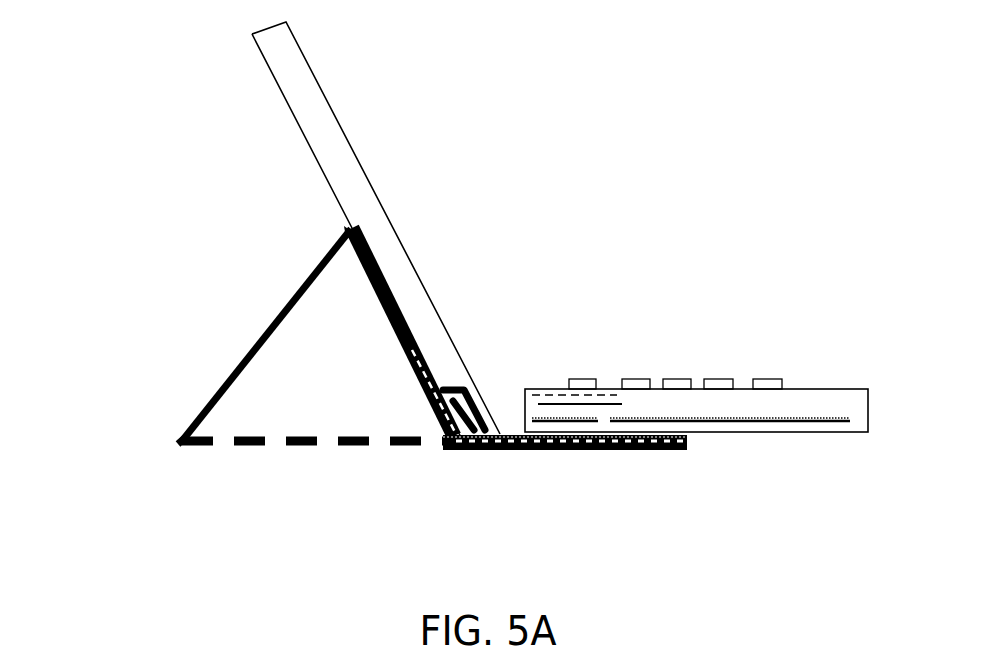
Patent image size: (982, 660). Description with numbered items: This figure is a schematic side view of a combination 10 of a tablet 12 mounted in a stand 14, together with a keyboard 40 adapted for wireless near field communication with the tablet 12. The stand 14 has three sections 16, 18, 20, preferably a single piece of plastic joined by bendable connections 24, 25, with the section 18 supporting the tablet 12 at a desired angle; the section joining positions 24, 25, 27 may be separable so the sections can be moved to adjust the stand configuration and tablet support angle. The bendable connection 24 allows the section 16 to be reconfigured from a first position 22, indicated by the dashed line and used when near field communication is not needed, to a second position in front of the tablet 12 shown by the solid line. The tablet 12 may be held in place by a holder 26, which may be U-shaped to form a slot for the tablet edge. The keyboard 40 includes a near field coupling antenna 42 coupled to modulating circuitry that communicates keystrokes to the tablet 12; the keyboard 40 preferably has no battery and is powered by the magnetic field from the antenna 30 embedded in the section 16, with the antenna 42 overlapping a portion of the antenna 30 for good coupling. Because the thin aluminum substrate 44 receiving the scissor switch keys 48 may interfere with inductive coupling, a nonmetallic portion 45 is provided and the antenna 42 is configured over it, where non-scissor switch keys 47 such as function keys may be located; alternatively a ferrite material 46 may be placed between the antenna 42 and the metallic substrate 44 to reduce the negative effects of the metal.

The combination 10 is at (596, 92).
The tablet 12 is at (326, 60).
The stand 14 is at (274, 354).
The section 16 is at (665, 450).
The section 18 is at (405, 350).
The section 20 is at (277, 312).
The first position 22 is at (290, 447).
The bendable connection 24 is at (460, 450).
The bendable connection 25 is at (346, 230).
The holder 26 is at (470, 392).
The section joining position 27 is at (180, 438).
The antenna 30 is at (500, 458).
The keyboard 40 is at (684, 406).
The near field coupling antenna 42 is at (579, 406).
The aluminum substrate 44 is at (770, 423).
The nonmetallic portion 45 is at (590, 424).
The ferrite material 46 is at (604, 389).
The non-scissor switch keys 47 is at (584, 394).
The scissor switch keys 48 is at (648, 380).